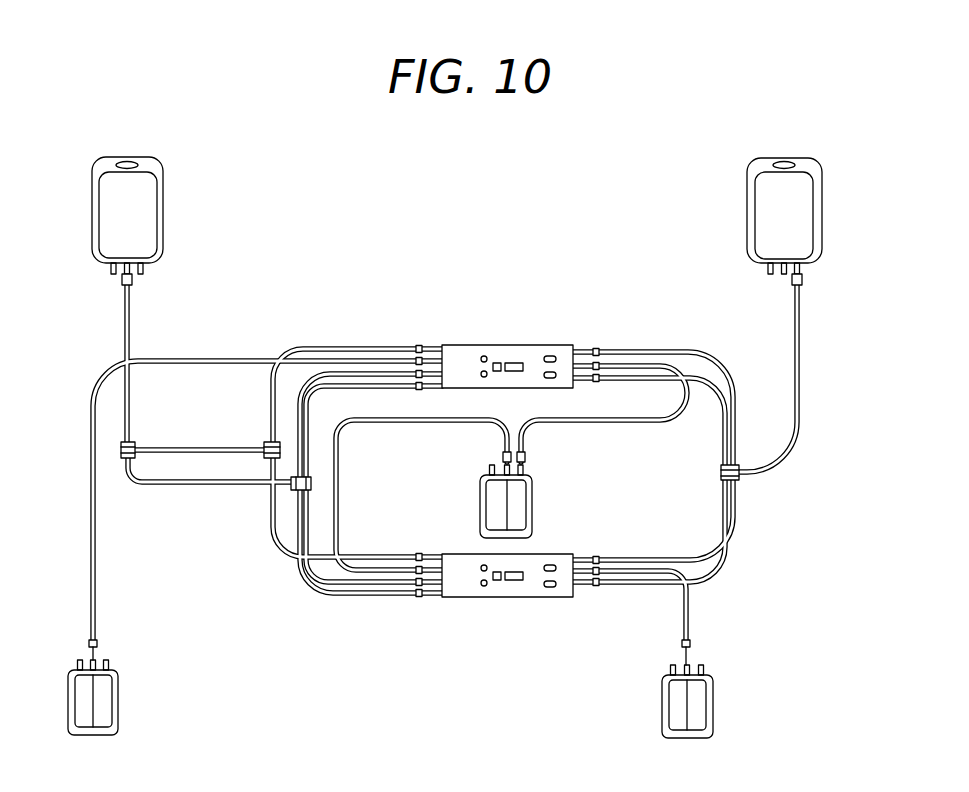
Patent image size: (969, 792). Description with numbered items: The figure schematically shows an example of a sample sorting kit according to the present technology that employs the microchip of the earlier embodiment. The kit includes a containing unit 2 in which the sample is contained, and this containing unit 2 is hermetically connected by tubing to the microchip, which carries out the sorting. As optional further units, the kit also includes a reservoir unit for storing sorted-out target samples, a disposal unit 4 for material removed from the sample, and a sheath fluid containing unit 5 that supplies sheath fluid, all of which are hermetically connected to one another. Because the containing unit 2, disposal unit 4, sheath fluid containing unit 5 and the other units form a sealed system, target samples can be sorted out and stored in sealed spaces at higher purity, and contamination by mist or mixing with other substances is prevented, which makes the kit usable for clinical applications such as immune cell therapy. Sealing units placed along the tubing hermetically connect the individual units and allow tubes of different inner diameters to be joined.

The containing unit 2 is at (137, 697).
The disposal unit 4 is at (832, 213).
The sheath fluid containing unit 5 is at (177, 203).